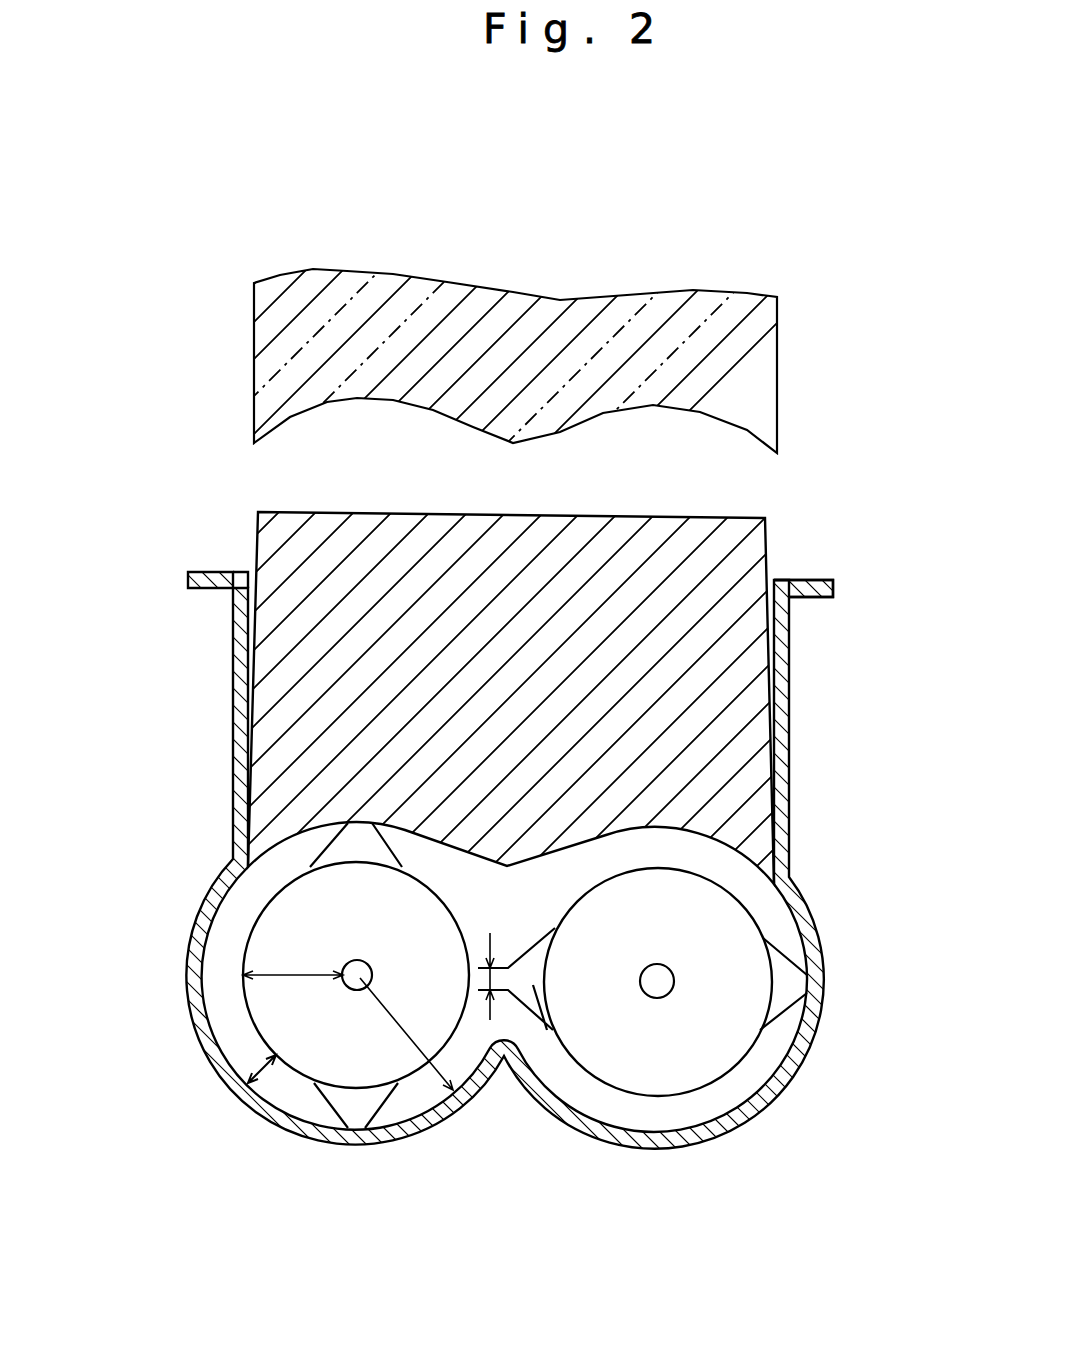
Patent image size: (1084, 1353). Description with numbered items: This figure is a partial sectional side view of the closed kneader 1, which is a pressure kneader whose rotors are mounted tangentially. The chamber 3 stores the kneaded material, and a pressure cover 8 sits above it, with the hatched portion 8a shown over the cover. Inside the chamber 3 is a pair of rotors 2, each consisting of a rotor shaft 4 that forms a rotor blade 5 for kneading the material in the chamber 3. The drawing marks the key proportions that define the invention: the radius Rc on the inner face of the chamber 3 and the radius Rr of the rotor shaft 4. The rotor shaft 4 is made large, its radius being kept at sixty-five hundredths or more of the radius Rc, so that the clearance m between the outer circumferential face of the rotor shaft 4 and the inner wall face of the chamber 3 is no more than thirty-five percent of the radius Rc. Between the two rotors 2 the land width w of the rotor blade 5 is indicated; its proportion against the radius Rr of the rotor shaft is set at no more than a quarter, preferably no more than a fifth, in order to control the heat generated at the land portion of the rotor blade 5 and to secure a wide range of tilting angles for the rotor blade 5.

The closed kneader 1 is at (767, 517).
The rotor 2 is at (778, 943).
The chamber 3 is at (834, 579).
The rotor shaft 4 is at (684, 1028).
The rotor blade 5 is at (541, 985).
The pressure cover 8 is at (530, 590).
The toner supply 8a is at (663, 308).
The radius of the rotor shaft Rr is at (317, 973).
The radius on the inner face of the chamber Rc is at (430, 1033).
The clearance m is at (262, 1069).
The land width of the rotor blade w is at (472, 984).